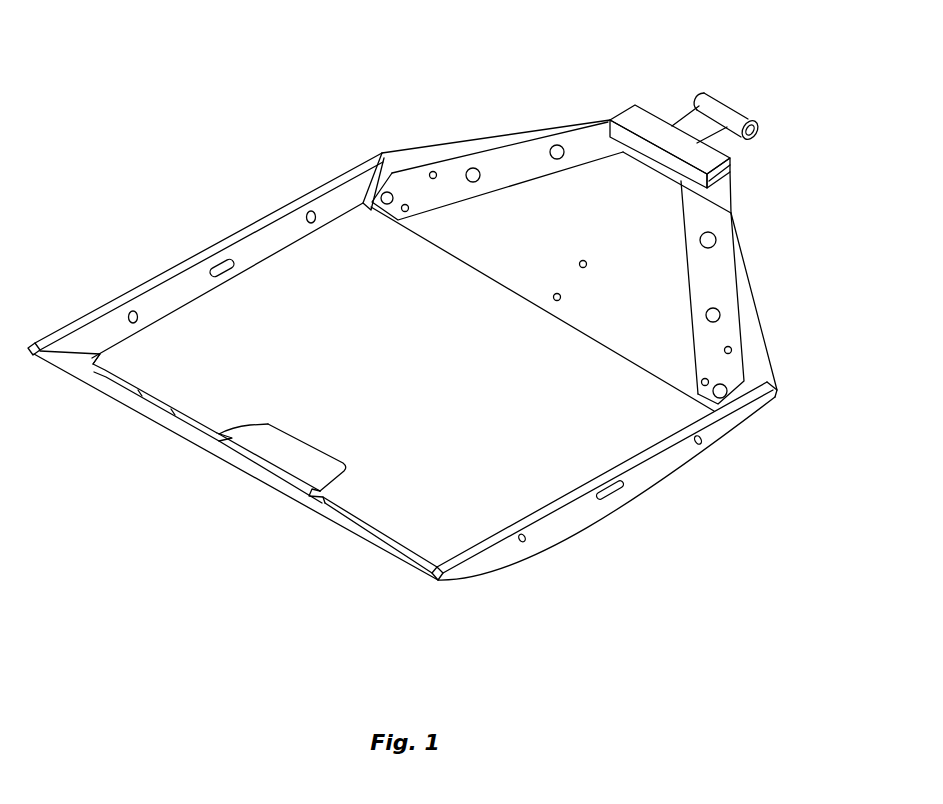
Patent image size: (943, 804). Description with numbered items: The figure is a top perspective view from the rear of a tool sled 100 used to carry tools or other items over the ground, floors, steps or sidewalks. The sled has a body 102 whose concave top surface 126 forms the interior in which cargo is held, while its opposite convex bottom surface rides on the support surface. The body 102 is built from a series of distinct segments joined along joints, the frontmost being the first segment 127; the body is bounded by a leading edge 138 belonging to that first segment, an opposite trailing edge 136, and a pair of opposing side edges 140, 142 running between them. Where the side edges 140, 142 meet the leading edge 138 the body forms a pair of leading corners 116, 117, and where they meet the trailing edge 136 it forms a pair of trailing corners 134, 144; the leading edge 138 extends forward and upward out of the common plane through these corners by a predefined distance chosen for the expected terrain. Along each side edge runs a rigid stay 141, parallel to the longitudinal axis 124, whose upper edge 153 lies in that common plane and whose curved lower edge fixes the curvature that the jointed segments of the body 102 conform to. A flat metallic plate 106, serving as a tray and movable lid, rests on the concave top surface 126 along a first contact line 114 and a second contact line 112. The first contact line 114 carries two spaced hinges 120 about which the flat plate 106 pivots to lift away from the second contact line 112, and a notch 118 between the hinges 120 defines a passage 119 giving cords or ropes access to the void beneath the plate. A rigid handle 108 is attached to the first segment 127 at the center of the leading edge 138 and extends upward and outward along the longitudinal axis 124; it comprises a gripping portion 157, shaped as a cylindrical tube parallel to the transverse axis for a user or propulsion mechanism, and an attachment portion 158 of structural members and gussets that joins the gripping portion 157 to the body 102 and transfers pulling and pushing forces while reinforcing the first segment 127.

The tool sled 100 is at (186, 36).
The body 102 is at (240, 472).
The flat plate 106 is at (450, 252).
The rigid handle 108 is at (738, 105).
The second contact line 112 is at (610, 346).
The first contact line 114 is at (398, 542).
The leading corner 116 is at (383, 150).
The leading corner 117 is at (778, 392).
The notch 118 is at (313, 445).
The passage 119 is at (262, 437).
The hinge 120 is at (112, 378).
The longitudinal axis 124 is at (278, 479).
The concave top surface 126 is at (538, 197).
The first segment 127 is at (451, 150).
The trailing corner 134 is at (436, 586).
The trailing edge 136 is at (143, 422).
The leading edge 138 is at (773, 337).
The side edge 140 is at (213, 242).
The rigid stay 141 is at (173, 290).
The side edge 142 is at (622, 511).
The trailing corner 144 is at (30, 346).
The upper edge 153 is at (110, 303).
The gripping portion 157 is at (706, 92).
The attachment portion 158 is at (725, 248).